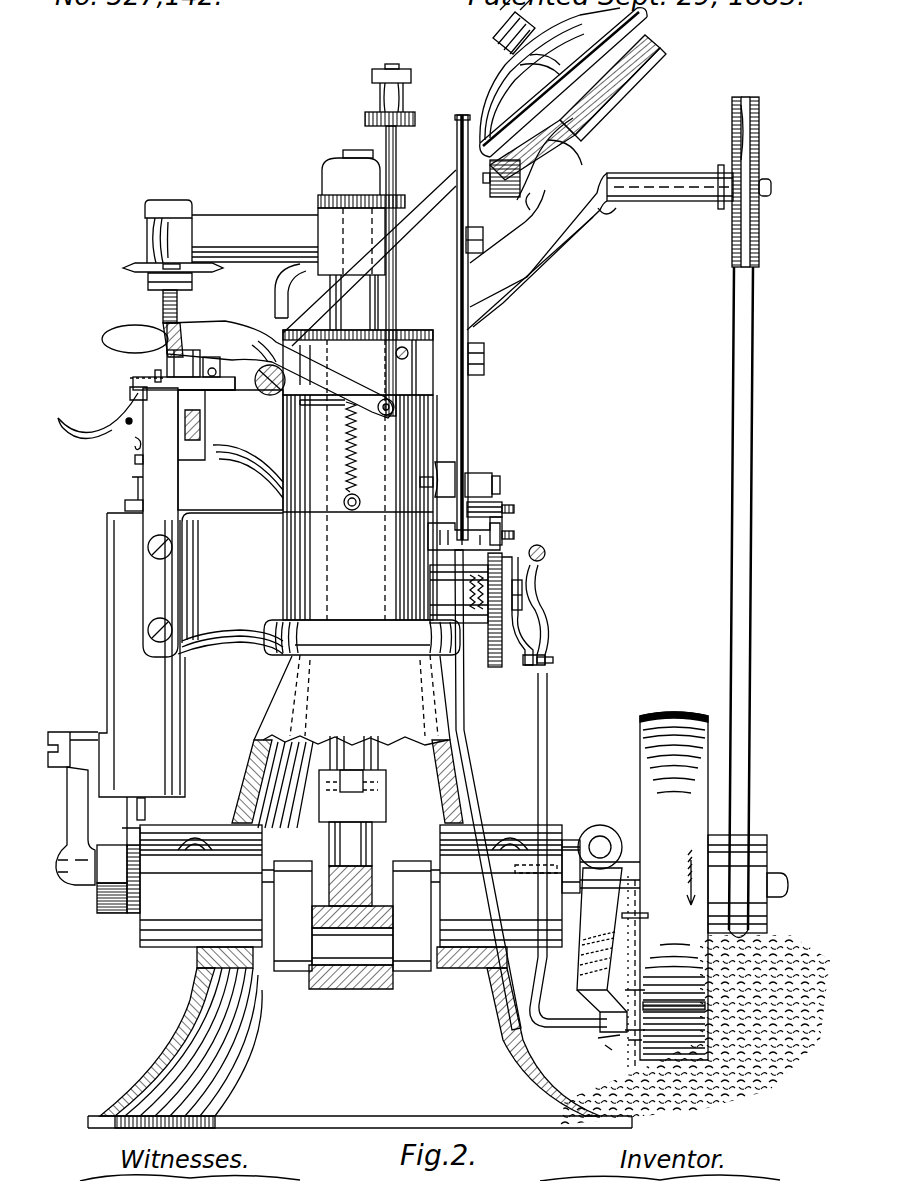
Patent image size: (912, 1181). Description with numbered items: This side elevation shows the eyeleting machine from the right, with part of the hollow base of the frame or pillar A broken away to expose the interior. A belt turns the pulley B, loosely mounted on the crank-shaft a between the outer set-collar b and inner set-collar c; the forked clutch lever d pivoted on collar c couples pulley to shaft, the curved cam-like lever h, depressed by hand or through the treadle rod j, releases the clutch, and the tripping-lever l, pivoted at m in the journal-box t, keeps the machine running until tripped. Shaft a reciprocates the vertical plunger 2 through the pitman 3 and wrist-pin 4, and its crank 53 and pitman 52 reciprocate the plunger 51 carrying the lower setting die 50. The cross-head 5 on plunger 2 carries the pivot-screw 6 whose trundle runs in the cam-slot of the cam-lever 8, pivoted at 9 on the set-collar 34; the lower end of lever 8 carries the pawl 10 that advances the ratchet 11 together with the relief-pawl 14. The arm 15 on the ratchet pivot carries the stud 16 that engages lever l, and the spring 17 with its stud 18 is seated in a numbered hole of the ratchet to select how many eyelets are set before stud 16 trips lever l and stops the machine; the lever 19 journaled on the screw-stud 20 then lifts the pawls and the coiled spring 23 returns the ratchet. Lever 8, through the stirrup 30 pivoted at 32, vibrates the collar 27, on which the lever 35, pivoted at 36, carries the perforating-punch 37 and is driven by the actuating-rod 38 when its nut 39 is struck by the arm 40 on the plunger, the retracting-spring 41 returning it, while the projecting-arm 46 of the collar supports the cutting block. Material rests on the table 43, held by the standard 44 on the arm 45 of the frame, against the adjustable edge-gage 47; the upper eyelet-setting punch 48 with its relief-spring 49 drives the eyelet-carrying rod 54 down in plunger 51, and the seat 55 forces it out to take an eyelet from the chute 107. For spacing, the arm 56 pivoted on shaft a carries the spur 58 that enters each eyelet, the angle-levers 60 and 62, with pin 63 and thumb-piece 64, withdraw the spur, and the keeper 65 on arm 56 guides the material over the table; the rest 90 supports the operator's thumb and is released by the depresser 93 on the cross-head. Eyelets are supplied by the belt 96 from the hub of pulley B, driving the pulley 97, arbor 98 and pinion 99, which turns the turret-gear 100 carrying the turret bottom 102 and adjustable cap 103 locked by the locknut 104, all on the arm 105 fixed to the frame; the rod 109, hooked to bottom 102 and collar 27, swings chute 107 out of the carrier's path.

The vertical plunger 2 is at (352, 152).
The pitman 3 is at (352, 838).
The wrist-pin 4 is at (351, 947).
The cross-head 5 is at (351, 241).
The pivot-screw 6 is at (480, 240).
The cam-lever 8 is at (470, 418).
The pivot 9 is at (482, 359).
The pawl 10 is at (514, 509).
The ratchet 11 is at (494, 620).
The relief-pawl 14 is at (513, 531).
The arm 15 is at (517, 611).
The stud 16 is at (556, 657).
The spring 17 is at (542, 615).
The stud 18 is at (529, 555).
The lever 19 is at (452, 590).
The screw-stud 20 is at (523, 606).
The coiled spring 23 is at (459, 604).
The collar 27 is at (360, 507).
The stirrup 30 is at (456, 479).
The pivot 32 is at (500, 485).
The set-collar 34 is at (358, 362).
The lever 35 is at (280, 369).
The pivot 36 is at (270, 380).
The perforating-punch 37 is at (183, 363).
The actuating-rod 38 is at (393, 283).
The nut 39 is at (383, 112).
The arm 40 is at (405, 200).
The retracting-spring 41 is at (338, 455).
The table 43 is at (182, 388).
The standard 44 is at (160, 522).
The arm of frame 45 is at (191, 655).
The projecting-arm 46 is at (230, 450).
The adjustable edge-gage 47 is at (214, 364).
The upper eyelet-setting punch 48 is at (163, 308).
The relief-spring 49 is at (197, 285).
The lower setting die 50 is at (132, 482).
The plunger 51 is at (135, 505).
The pitman 52 is at (73, 808).
The crank 53 is at (118, 879).
The eyelet-carrying rod 54 is at (145, 810).
The seat 55 is at (121, 833).
The arm 56 is at (127, 811).
The spur 58 is at (150, 369).
The angle-lever 60 is at (137, 414).
The angle-lever 62 is at (127, 442).
The pin 63 is at (125, 459).
The thumb-piece 64 is at (98, 416).
The keeper 65 is at (136, 376).
The rest 90 is at (135, 339).
The depresser 93 is at (280, 291).
The belt 96 is at (753, 602).
The pulley 97 is at (732, 130).
The arbor 98 is at (699, 187).
The pinion 99 is at (495, 180).
The turret-gear 100 is at (628, 66).
The turret bottom 102 is at (563, 82).
The turret cap 103 is at (550, 75).
The locknut 104 is at (496, 52).
The arm 105 is at (541, 224).
The chute 107 is at (318, 310).
The rod 109 is at (481, 212).
The frame or pillar A is at (360, 891).
The driving-pulley B is at (674, 886).
The crank-shaft a is at (532, 916).
The outer set-collar b is at (737, 884).
The inner set-collar c is at (616, 840).
The forked clutch lever d is at (602, 940).
The cam-like lever h is at (642, 973).
The rod j is at (609, 1050).
The tripping-lever l is at (541, 791).
The pivot m is at (524, 874).
The journal-box t is at (360, 886).